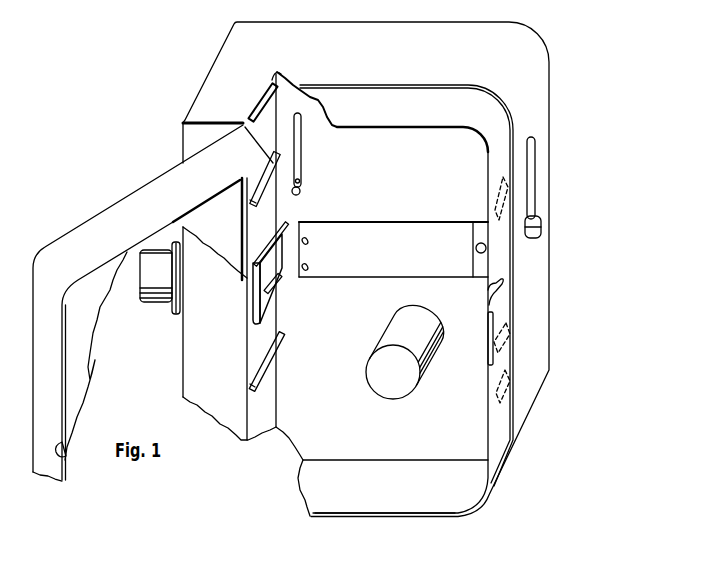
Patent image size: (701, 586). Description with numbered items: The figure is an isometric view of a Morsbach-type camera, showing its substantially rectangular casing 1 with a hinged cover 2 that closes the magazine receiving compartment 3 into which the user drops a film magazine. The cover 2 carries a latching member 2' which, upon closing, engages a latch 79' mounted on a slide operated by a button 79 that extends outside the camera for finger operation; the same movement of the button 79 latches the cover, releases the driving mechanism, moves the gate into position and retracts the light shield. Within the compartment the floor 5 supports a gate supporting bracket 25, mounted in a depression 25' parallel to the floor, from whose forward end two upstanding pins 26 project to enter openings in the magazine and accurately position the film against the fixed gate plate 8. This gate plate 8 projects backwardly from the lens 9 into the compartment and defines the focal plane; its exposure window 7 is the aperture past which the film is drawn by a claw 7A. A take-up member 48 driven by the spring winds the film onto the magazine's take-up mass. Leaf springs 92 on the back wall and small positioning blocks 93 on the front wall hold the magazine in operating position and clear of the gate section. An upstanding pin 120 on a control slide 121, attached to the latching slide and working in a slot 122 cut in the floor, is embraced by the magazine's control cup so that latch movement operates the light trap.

The casing 1 is at (197, 67).
The hinged cover 2 is at (138, 303).
The latching member 2' is at (77, 450).
The magazine receiving compartment 3 is at (334, 422).
The floor 5 is at (380, 292).
The exposure window 7 is at (275, 282).
The claw 7A is at (290, 228).
The gate plate 8 is at (272, 293).
The lens 9 is at (158, 302).
The gate supporting bracket 25 is at (393, 249).
The depression 25' is at (323, 237).
The upstanding pins 26 is at (309, 264).
The take-up member 48 is at (405, 352).
The button 79 is at (556, 187).
The latch 79' is at (537, 322).
The leaf springs 92 is at (507, 202).
The positioning blocks 93 is at (262, 213).
The upstanding pin 120 is at (300, 192).
The control slide 121 is at (299, 180).
The slot 122 is at (302, 152).